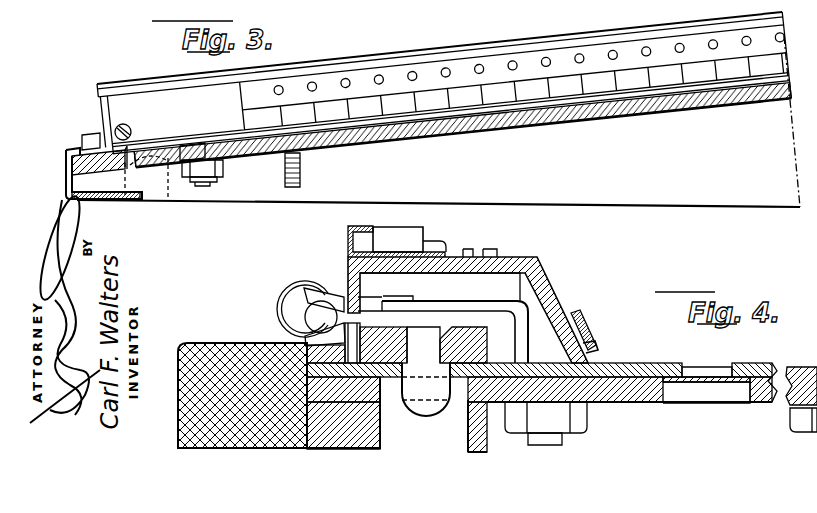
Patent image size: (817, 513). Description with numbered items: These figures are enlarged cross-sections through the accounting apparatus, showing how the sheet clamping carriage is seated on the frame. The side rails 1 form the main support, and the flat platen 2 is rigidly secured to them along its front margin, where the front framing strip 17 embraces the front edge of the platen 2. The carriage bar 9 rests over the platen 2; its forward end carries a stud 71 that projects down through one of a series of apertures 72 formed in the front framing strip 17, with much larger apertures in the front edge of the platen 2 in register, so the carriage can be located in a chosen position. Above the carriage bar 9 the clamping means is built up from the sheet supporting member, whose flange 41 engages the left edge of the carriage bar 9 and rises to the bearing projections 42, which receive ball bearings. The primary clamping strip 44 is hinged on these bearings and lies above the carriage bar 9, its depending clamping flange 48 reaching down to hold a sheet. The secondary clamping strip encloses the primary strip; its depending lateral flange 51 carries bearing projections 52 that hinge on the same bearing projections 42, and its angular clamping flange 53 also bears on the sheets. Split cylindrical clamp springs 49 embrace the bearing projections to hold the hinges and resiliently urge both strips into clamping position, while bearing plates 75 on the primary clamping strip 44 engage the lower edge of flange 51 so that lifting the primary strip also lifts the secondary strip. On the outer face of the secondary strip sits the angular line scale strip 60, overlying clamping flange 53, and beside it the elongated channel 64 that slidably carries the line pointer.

In FIG. 3, the side rails 1 is at (246, 188).
In FIG. 4, the side rails 1 is at (213, 343).
In FIG. 4, the platen 2 is at (633, 403).
In FIG. 4, the carriage bar 9 is at (473, 330).
In FIG. 3, the front framing strip 17 is at (66, 172).
In FIG. 4, the laterally extending flange 41 is at (360, 341).
In FIG. 4, the bearing projections 42 is at (282, 323).
In FIG. 4, the primary clamping strip 44 is at (494, 306).
In FIG. 4, the clamping flange 48 is at (519, 349).
In FIG. 4, the split cylindrical clamp springs 49 is at (298, 285).
In FIG. 4, the lateral flange 51 is at (364, 284).
In FIG. 4, the bearing projections 52 is at (316, 292).
In FIG. 4, the clamping flange 53 is at (559, 314).
In FIG. 4, the line scale strip 60 is at (512, 256).
In FIG. 4, the channel 64 is at (348, 238).
In FIG. 3, the stud 71 is at (149, 174).
In FIG. 4, the stud 71 is at (427, 415).
In FIG. 4, the apertures 72 is at (447, 375).
In FIG. 4, the bearing plates 75 is at (392, 298).